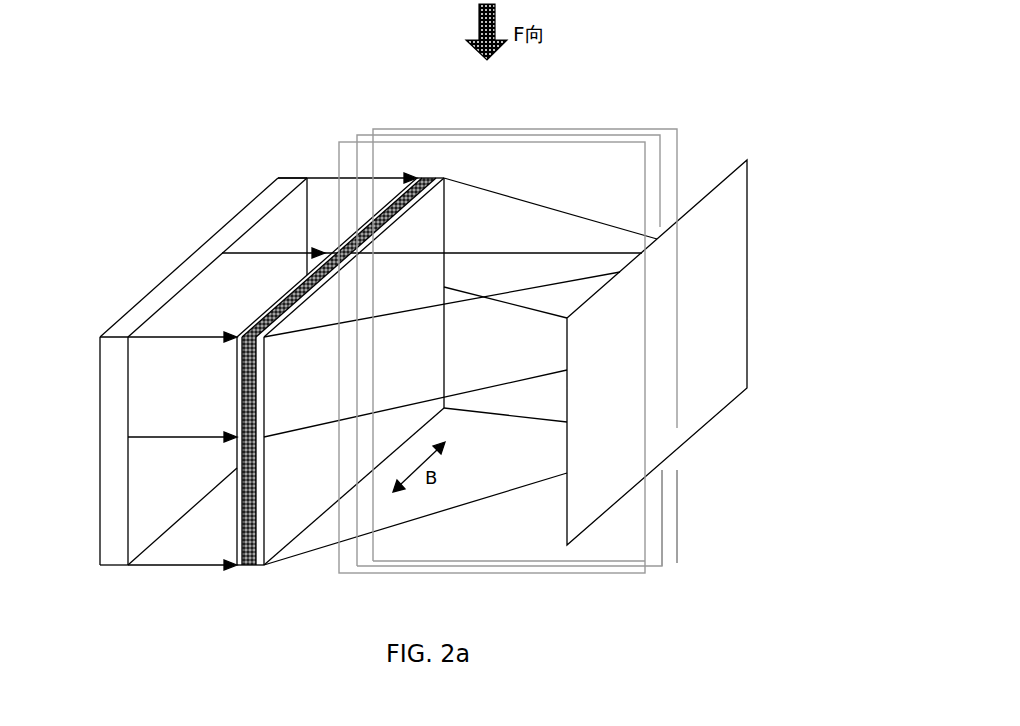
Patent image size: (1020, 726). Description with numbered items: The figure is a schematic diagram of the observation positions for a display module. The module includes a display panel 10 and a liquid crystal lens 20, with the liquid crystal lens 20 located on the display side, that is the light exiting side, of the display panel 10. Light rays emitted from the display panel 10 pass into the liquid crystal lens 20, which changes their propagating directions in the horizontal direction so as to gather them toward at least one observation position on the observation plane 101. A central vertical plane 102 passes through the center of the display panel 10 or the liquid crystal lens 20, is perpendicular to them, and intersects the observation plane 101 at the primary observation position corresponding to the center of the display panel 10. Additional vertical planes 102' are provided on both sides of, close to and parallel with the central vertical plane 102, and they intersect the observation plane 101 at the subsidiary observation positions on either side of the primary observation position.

The display panel 10 is at (117, 437).
The liquid crystal lens 20 is at (264, 571).
The observation plane 101 is at (735, 329).
The central vertical plane 102 is at (537, 351).
The additional vertical planes 102' is at (703, 518).